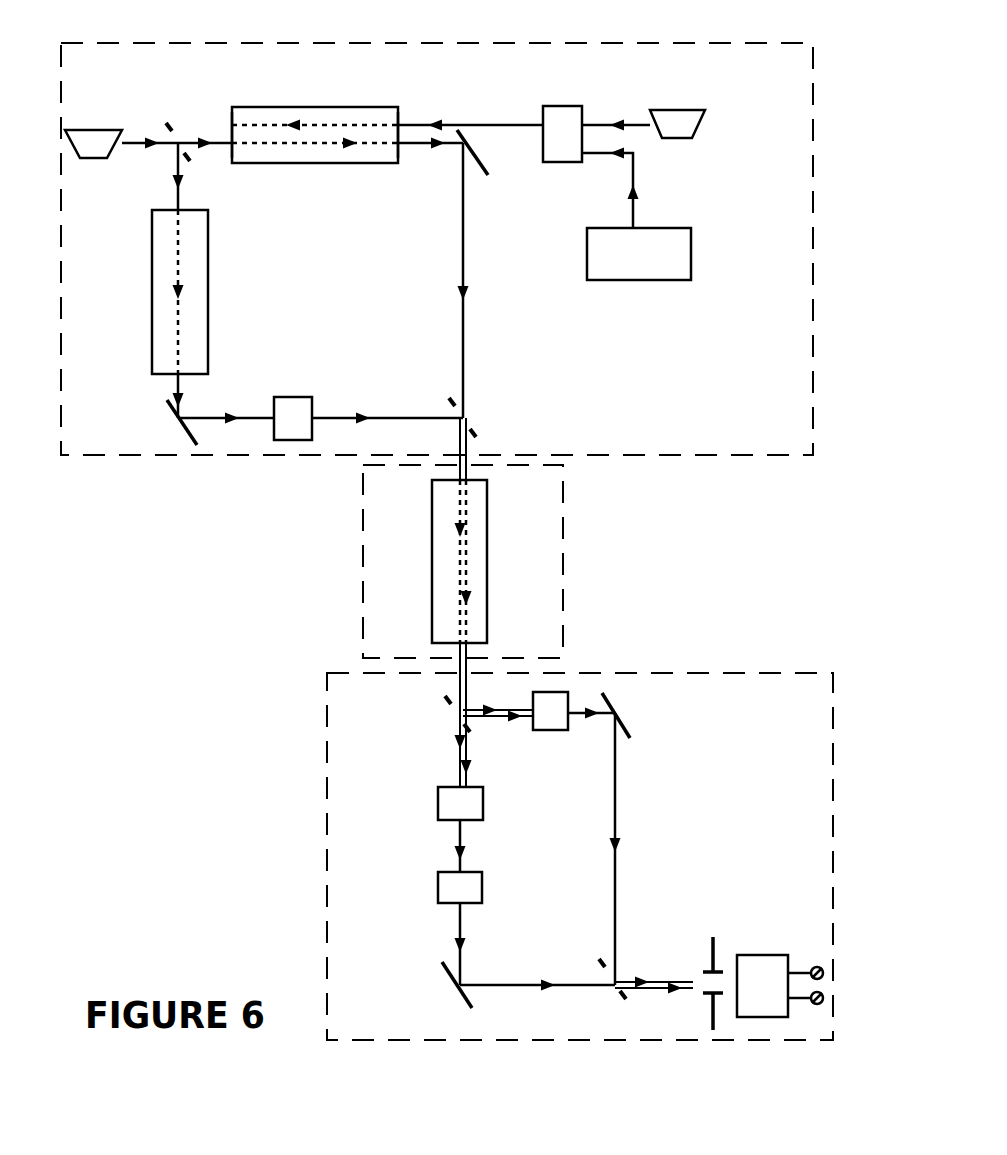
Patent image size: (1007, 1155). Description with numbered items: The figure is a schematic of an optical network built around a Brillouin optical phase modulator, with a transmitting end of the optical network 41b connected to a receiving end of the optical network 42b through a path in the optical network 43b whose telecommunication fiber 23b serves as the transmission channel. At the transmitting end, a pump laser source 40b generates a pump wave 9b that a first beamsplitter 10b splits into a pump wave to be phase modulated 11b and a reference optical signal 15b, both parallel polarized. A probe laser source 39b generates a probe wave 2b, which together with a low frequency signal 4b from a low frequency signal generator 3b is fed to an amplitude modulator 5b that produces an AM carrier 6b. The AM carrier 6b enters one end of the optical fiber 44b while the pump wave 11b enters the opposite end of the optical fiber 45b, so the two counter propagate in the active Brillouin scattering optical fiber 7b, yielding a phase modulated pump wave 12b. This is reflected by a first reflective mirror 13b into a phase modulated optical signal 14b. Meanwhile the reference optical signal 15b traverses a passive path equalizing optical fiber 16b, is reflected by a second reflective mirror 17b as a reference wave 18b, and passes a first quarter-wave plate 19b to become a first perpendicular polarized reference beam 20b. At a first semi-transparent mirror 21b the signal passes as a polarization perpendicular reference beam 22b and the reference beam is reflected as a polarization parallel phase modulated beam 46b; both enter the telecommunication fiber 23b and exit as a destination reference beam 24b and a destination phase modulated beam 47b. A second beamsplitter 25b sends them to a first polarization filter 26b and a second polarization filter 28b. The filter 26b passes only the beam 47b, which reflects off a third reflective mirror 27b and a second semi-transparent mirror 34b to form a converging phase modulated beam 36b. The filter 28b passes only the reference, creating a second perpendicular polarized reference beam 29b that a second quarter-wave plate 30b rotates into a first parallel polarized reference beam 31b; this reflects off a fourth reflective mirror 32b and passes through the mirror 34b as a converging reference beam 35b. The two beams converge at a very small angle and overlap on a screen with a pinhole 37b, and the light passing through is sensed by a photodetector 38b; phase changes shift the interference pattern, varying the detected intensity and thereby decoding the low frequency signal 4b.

The probe wave 2b is at (633, 125).
The low frequency signal generator 3b is at (691, 265).
The low frequency signal 4b is at (637, 157).
The amplitude modulator 5b is at (565, 106).
The amplitude modulated carrier 6b is at (520, 125).
The active Brillouin scattering optical fiber 7b is at (345, 107).
The pump wave 9b is at (135, 145).
The first beamsplitter 10b is at (162, 125).
The pump wave to be phase modulated 11b is at (218, 143).
The phase modulated pump wave 12b is at (423, 143).
The first reflective mirror 13b is at (488, 175).
The phase modulated optical signal 14b is at (463, 225).
The reference optical signal 15b is at (180, 195).
The passive path equalizing optical fiber 16b is at (152, 258).
The second reflective mirror 17b is at (165, 400).
The reference wave 18b is at (210, 418).
The first quarter-wave plate 19b is at (282, 397).
The first perpendicular polarized reference beam 20b is at (410, 418).
The first semi-transparent mirror 21b is at (450, 400).
The polarization perpendicular reference beam 22b is at (460, 425).
The telecommunication fiber 23b is at (432, 522).
The destination reference beam 24b is at (458, 683).
The second beamsplitter 25b is at (470, 728).
The first polarization filter 26b is at (545, 730).
The third reflective mirror 27b is at (630, 738).
The second polarization filter 28b is at (483, 795).
The second perpendicular polarized reference beam 29b is at (460, 833).
The second quarter-wave plate 30b is at (482, 880).
The first parallel polarized reference beam 31b is at (460, 912).
The fourth reflective mirror 32b is at (462, 1003).
The second semi-transparent mirror 34b is at (603, 960).
The converging reference beam 35b is at (640, 988).
The converging phase modulated beam 36b is at (688, 978).
The screen with a pinhole 37b is at (713, 937).
The photodetector 38b is at (752, 955).
The probe laser source 39b is at (700, 130).
The pump laser source 40b is at (70, 130).
The transmitting end of the optical network 41b is at (730, 43).
The receiving end of the optical network 42b is at (780, 673).
The path in the optical network 43b is at (363, 505).
The end of the optical fiber 44b is at (398, 110).
The opposite end of the optical fiber 45b is at (232, 110).
The polarization parallel phase modulated beam 46b is at (468, 448).
The destination phase modulated beam 47b is at (468, 652).